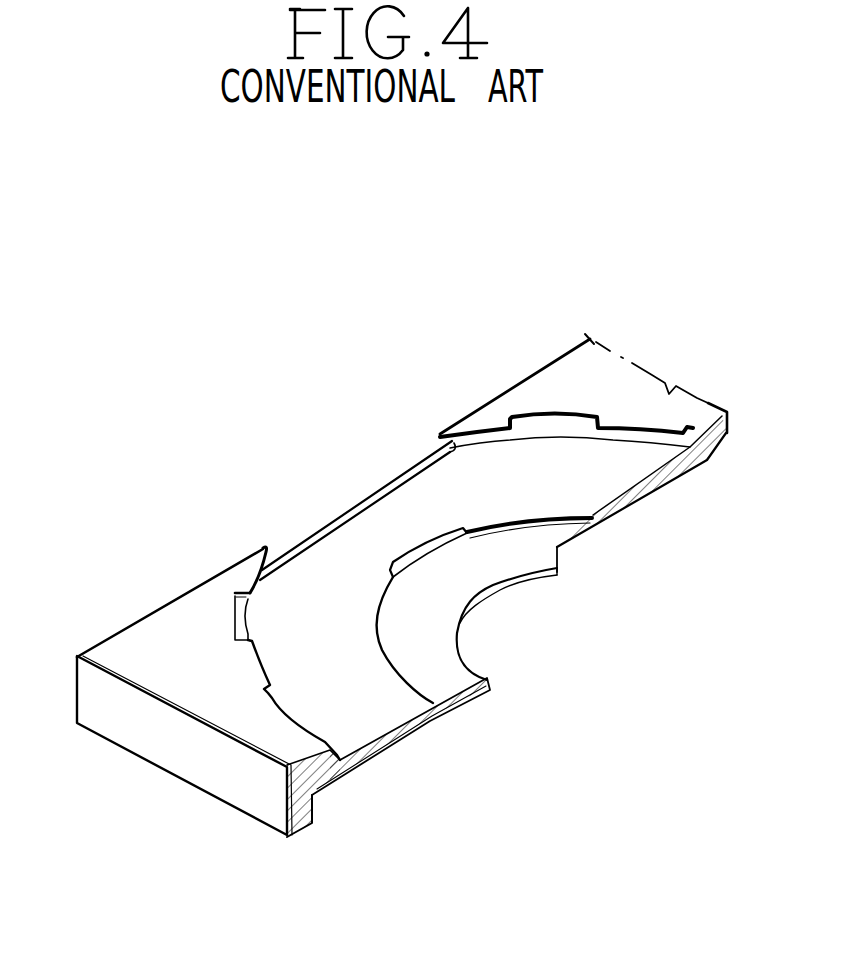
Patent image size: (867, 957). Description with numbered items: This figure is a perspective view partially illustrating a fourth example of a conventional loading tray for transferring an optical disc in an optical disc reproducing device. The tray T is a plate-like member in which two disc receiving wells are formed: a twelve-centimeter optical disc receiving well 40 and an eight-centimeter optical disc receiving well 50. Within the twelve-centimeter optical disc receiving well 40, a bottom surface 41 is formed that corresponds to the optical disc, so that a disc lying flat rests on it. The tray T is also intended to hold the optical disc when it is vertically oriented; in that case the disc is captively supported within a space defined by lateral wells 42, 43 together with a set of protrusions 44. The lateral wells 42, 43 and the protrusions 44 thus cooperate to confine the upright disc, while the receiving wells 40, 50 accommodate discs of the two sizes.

The 12 cm optical disc receiving well 40 is at (360, 779).
The bottom surface 41 is at (313, 707).
The lateral well 42 is at (557, 428).
The lateral well 43 is at (235, 596).
The protrusion 44 is at (180, 596).
The 8 cm optical disc receiving well 50 is at (423, 733).
The tray T is at (318, 478).